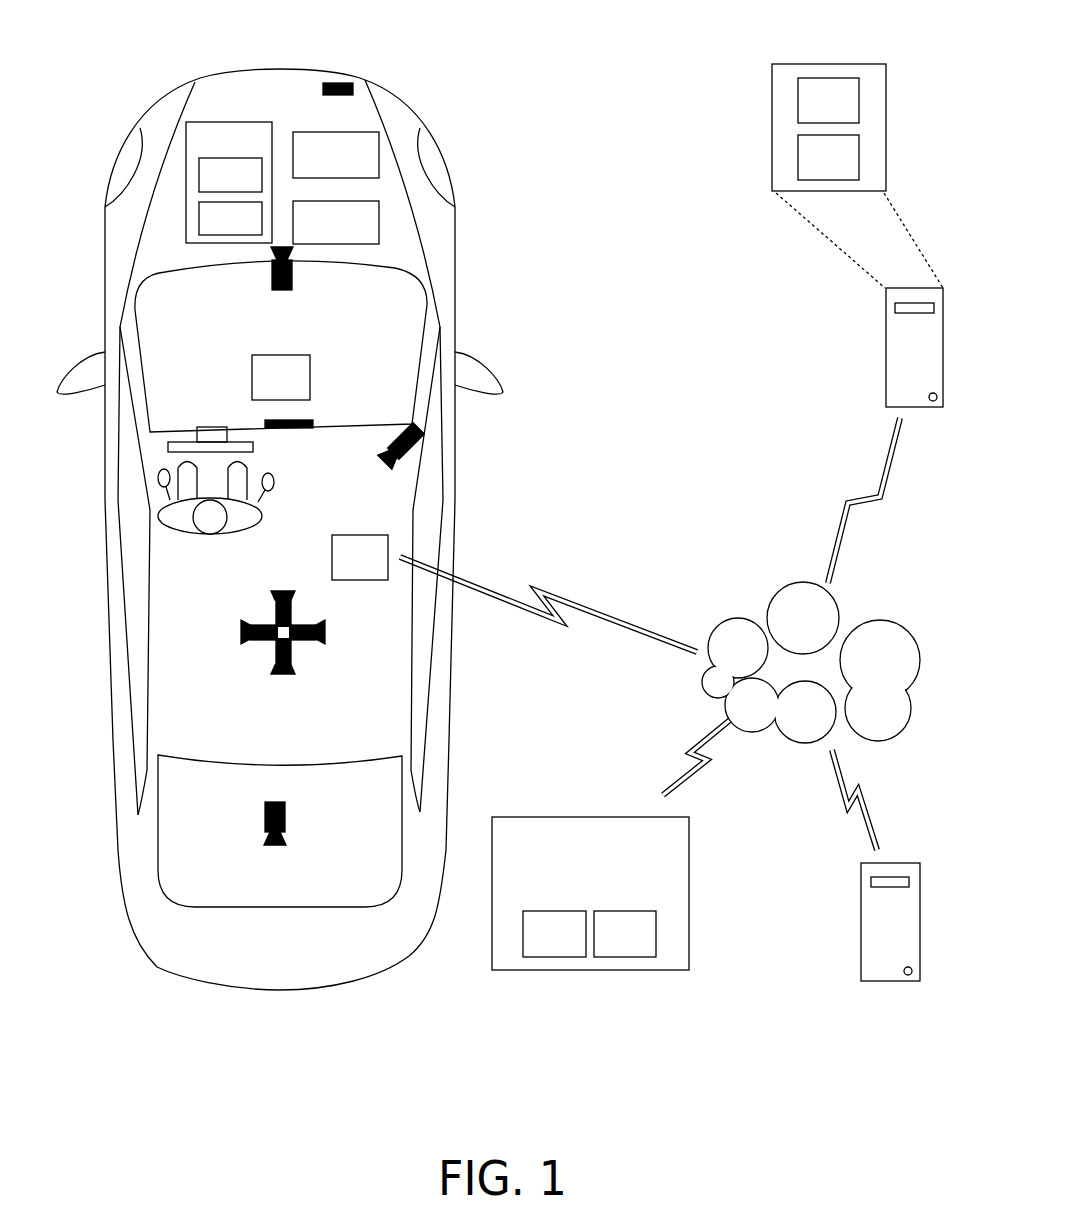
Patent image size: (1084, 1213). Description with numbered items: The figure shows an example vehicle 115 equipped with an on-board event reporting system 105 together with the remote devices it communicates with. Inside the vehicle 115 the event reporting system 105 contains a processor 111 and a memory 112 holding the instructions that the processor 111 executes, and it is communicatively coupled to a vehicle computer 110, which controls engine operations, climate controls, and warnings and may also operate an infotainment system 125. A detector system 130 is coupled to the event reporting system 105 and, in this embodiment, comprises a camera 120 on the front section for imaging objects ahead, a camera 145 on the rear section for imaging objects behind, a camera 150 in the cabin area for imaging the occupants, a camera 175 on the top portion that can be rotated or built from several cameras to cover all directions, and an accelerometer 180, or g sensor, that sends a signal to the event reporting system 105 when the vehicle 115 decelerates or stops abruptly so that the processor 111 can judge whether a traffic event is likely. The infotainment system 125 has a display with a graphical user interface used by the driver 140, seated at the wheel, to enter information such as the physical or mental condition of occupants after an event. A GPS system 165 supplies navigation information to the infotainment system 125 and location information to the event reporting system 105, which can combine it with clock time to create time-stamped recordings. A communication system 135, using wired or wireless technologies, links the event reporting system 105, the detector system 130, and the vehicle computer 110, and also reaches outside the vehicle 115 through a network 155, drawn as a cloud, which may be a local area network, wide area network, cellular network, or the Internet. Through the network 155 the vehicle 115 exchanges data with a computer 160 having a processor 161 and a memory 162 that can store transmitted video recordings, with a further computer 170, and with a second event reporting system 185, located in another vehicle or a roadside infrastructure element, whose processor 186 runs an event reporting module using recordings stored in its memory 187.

The event reporting system 105 is at (247, 147).
The vehicle computer 110 is at (354, 167).
The processor 111 is at (248, 185).
The memory 112 is at (248, 228).
The vehicle 115 is at (469, 110).
The camera 120 is at (281, 290).
The infotainment system 125 is at (290, 428).
The detector system 130 is at (354, 236).
The communication system 135 is at (378, 569).
The driver 140 is at (240, 533).
The camera 145 is at (272, 846).
The camera 150 is at (376, 471).
The network 155 is at (894, 681).
The computer 160 is at (862, 356).
The processor 161 is at (828, 100).
The memory 162 is at (828, 157).
The global positioning satellite (GPS) system 165 is at (299, 390).
The computer 170 is at (836, 931).
The camera 175 is at (258, 655).
The accelerometer 180 is at (323, 89).
The event reporting system 185 is at (678, 847).
The processor 186 is at (554, 934).
The memory 187 is at (625, 934).